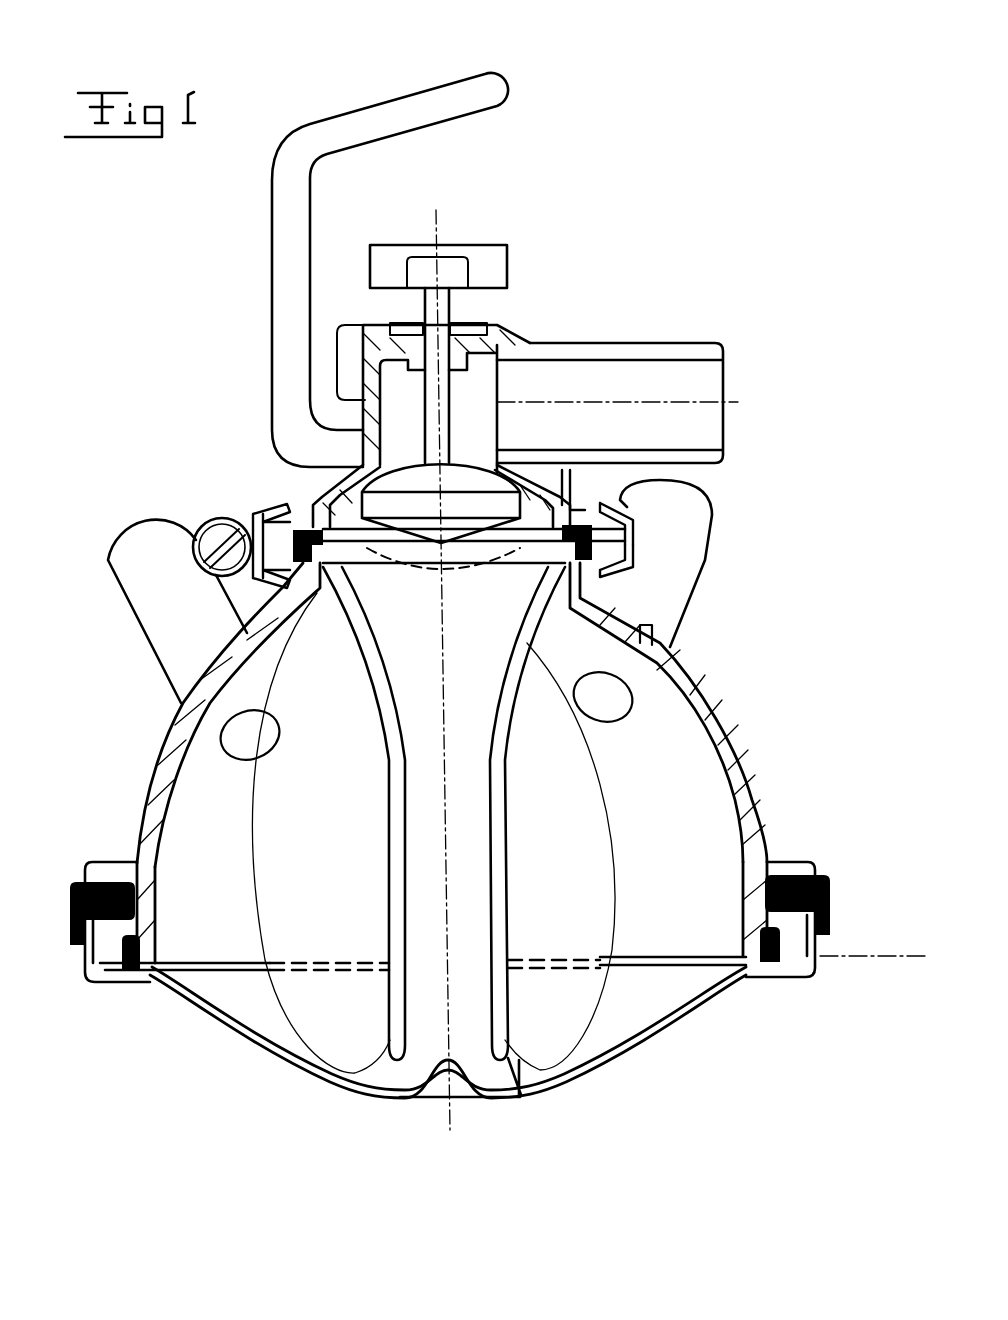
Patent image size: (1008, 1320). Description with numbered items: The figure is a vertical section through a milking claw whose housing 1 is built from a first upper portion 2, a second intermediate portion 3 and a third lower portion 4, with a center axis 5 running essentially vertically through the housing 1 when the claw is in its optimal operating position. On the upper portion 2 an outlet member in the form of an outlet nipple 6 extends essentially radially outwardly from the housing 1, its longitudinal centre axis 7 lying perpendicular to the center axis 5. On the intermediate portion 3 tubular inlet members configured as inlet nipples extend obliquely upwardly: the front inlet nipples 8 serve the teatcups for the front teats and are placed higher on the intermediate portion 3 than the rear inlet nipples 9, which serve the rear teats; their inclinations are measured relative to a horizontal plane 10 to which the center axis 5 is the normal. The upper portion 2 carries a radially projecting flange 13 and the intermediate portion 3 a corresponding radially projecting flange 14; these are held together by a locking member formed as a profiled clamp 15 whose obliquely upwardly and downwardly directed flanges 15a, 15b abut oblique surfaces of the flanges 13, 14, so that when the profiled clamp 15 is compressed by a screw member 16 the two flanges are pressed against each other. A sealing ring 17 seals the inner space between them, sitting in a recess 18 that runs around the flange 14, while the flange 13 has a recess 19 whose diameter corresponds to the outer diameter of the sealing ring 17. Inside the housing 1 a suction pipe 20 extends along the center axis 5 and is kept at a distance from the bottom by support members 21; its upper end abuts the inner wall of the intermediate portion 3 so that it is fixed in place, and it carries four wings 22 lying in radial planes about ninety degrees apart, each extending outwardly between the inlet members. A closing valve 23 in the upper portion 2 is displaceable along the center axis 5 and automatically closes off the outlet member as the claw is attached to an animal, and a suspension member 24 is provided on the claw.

The housing 1 is at (713, 722).
The first upper portion 2 is at (327, 472).
The second intermediate portion 3 is at (150, 792).
The third lower portion 4 is at (212, 1025).
The center axis 5 is at (440, 223).
The outlet nipple 6 is at (655, 343).
The longitudinal centre axis 7 is at (733, 400).
The front inlet nipple 8 is at (672, 607).
The rear inlet nipple 9 is at (180, 667).
The horizontal plane 10 is at (865, 950).
The radially projecting flange 13 is at (240, 522).
The radially projecting flange 14 is at (220, 583).
The profiled clamp 15 is at (630, 538).
The obliquely upwardly directed flange 15a is at (627, 510).
The obliquely downwardly directed flange 15b is at (633, 567).
The screw member 16 is at (200, 546).
The sealing ring 17 is at (577, 560).
The recess 18 is at (335, 567).
The recess 19 is at (300, 510).
The suction pipe 20 is at (630, 1040).
The support member 21 is at (521, 1100).
The wing 22 is at (523, 1100).
The closing valve 23 is at (445, 325).
The suspension member 24 is at (486, 90).